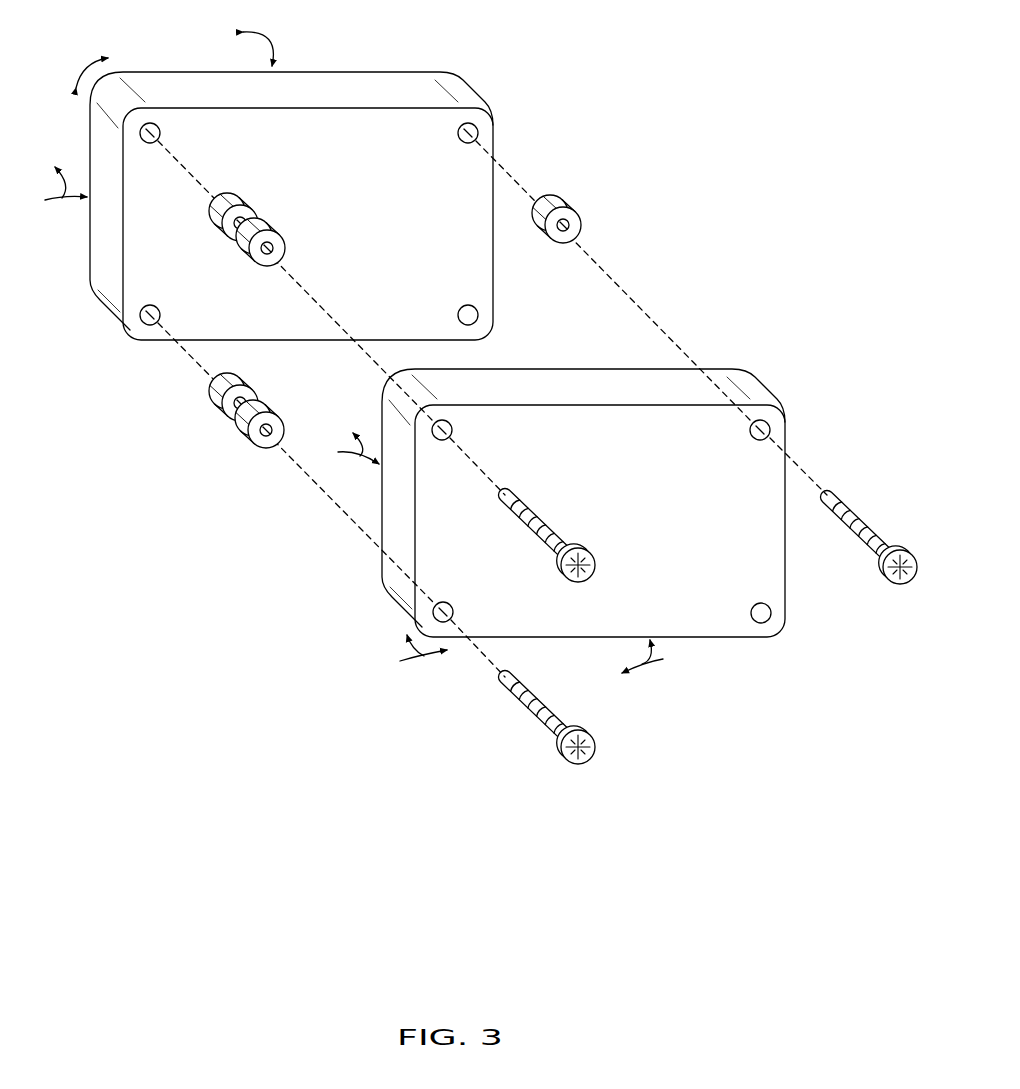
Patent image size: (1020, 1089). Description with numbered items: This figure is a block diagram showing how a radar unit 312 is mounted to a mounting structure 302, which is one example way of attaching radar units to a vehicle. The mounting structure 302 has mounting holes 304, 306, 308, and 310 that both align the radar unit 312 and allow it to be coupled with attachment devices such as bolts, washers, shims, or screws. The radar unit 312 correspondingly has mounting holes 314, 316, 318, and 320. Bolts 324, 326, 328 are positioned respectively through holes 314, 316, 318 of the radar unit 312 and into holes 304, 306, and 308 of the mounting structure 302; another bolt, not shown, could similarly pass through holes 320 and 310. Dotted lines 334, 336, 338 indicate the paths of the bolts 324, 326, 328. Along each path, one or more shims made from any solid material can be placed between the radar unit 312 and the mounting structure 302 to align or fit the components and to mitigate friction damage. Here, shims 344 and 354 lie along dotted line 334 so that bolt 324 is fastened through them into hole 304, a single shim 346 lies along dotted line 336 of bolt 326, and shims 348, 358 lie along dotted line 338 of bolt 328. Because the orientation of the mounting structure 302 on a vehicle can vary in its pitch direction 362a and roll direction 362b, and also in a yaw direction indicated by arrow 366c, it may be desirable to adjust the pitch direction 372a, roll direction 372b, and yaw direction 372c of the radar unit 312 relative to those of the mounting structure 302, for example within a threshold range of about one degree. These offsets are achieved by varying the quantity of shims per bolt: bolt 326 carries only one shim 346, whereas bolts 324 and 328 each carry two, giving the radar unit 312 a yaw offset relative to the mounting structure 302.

The mounting structure 302 is at (344, 80).
The mounting hole 304 is at (161, 131).
The mounting hole 306 is at (457, 136).
The mounting hole 308 is at (151, 305).
The mounting hole 310 is at (458, 309).
The radar unit 312 is at (560, 384).
The mounting hole 314 is at (453, 429).
The mounting hole 316 is at (750, 434).
The mounting hole 318 is at (444, 601).
The mounting hole 320 is at (751, 608).
The bolt 324 is at (571, 548).
The bolt 326 is at (894, 550).
The bolt 328 is at (571, 730).
The dotted line 334 is at (204, 186).
The dotted line 336 is at (519, 180).
The dotted line 338 is at (173, 336).
The shim 344 is at (270, 230).
The shim 346 is at (565, 207).
The shim 348 is at (270, 412).
The shim 354 is at (242, 205).
The shim 358 is at (243, 385).
The pitch direction 362a is at (268, 36).
The roll direction 362b is at (84, 66).
The rotation direction 366c is at (46, 191).
The pitch direction 372a is at (663, 656).
The roll direction 372b is at (403, 656).
The yaw direction 372c is at (340, 450).